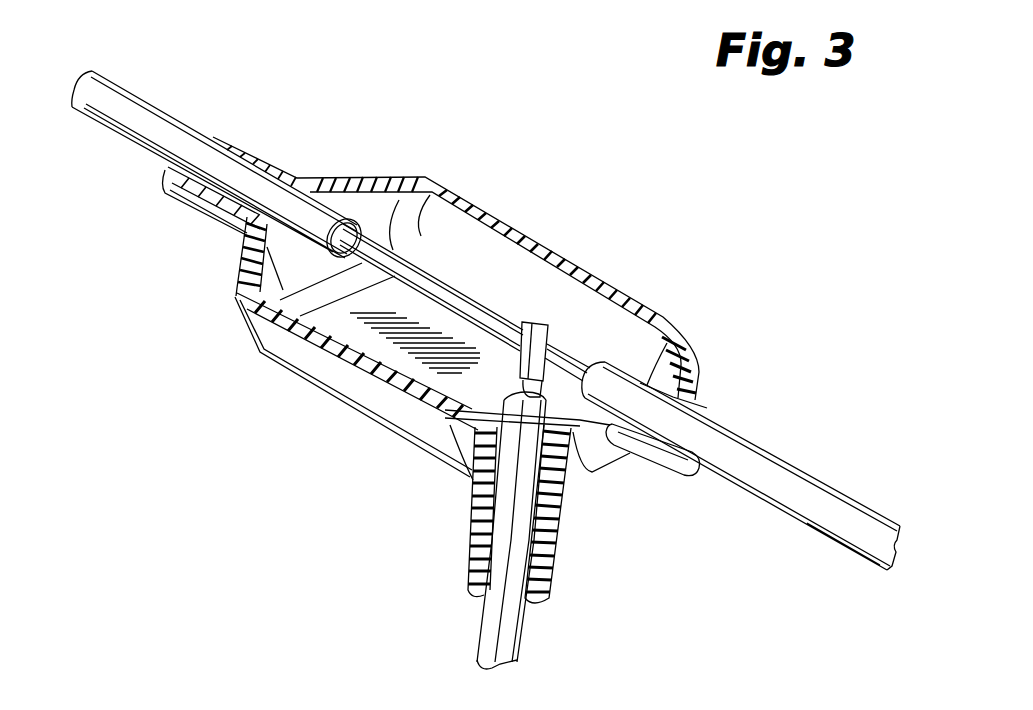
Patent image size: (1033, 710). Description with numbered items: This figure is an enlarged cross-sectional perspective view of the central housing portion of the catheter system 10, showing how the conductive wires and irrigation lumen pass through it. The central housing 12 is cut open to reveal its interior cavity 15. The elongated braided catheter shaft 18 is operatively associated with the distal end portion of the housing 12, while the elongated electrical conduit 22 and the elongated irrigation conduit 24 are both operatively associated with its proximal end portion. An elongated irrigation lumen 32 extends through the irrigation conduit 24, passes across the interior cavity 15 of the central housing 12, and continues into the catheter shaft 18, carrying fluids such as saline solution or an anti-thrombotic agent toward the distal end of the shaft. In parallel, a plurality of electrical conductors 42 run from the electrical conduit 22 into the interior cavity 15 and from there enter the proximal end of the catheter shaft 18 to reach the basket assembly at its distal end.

The catheter system 10 is at (686, 250).
The central housing 12 is at (344, 402).
The interior cavity 15 is at (445, 243).
The braided catheter shaft 18 is at (160, 133).
The electrical conduit 22 is at (483, 627).
The irrigation conduit 24 is at (823, 510).
The irrigation lumen 32 is at (563, 365).
The electrical conductors 42 is at (508, 352).